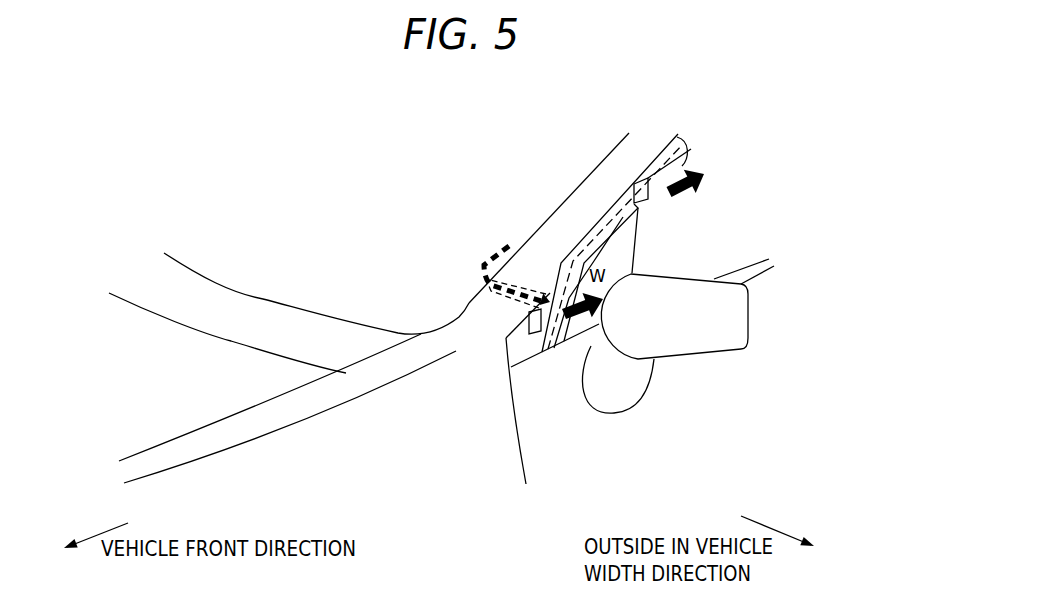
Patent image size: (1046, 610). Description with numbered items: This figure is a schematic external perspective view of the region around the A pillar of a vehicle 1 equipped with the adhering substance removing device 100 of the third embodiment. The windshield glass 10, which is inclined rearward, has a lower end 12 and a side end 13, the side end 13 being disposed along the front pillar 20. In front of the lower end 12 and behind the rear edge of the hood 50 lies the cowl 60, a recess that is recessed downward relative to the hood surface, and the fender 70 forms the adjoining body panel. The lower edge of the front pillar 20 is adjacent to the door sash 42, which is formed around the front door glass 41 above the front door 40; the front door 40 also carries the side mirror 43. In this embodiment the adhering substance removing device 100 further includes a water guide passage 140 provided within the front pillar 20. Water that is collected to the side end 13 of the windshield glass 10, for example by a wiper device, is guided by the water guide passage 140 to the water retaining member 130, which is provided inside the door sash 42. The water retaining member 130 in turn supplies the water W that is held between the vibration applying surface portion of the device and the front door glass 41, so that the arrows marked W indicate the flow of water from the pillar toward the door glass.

The vehicle 1 is at (158, 168).
The windshield glass 10 is at (395, 192).
The lower end 12 is at (262, 298).
The side end 13 is at (485, 263).
The front pillar 20 is at (657, 142).
The front door 40 is at (735, 394).
The front door glass 41 is at (703, 207).
The door sash 42 is at (673, 152).
The side mirror 43 is at (743, 325).
The hood 50 is at (100, 345).
The cowl 60 is at (242, 312).
The fender 70 is at (312, 456).
The adhering substance removing device 100 is at (533, 310).
The water retaining member 130 is at (622, 216).
The water guide passage 140 is at (510, 282).